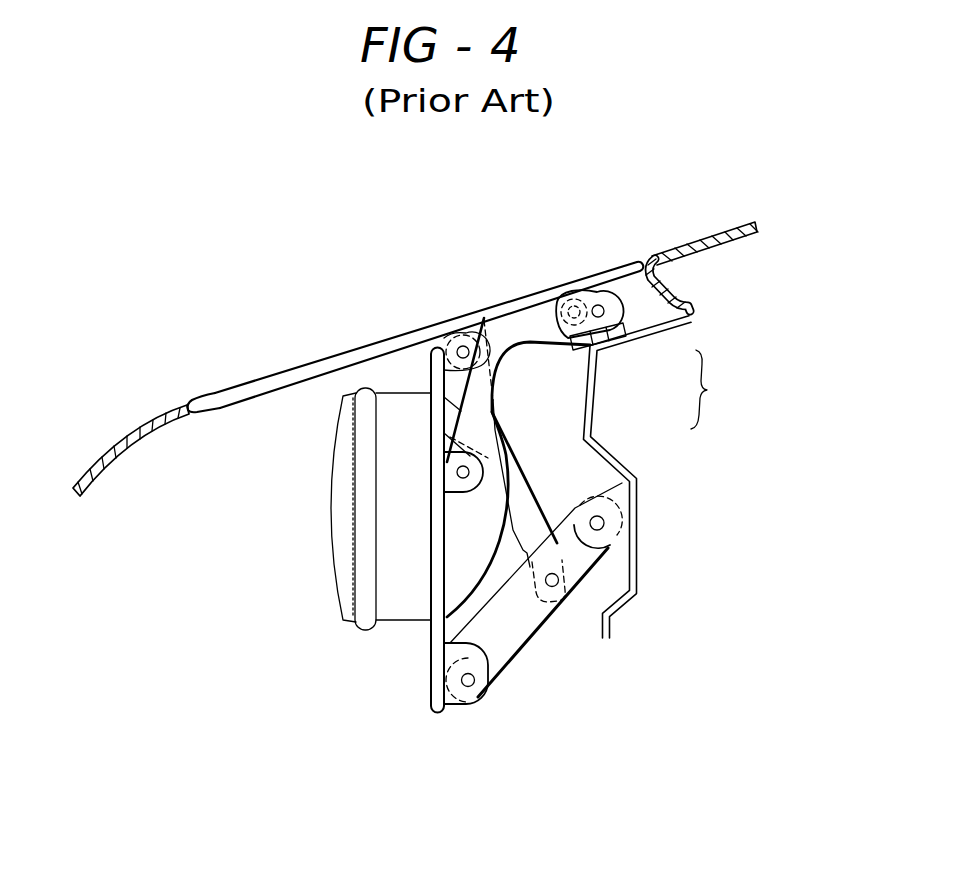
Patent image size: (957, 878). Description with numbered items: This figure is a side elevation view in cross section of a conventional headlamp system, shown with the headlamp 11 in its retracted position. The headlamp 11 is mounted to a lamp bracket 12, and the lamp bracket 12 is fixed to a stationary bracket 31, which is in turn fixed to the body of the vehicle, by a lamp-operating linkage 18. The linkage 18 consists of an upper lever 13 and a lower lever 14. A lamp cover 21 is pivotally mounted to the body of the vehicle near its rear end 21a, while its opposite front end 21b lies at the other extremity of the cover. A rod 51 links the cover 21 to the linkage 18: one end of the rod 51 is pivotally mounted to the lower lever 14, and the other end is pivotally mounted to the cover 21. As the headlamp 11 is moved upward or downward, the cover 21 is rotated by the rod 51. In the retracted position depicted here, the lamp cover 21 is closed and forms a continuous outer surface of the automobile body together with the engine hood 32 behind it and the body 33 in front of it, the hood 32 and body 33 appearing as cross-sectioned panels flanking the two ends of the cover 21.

The headlamp 11 is at (334, 504).
The lamp bracket 12 is at (431, 706).
The upper lever 13 is at (531, 342).
The lower lever 14 is at (543, 545).
The lamp-operating linkage 18 is at (716, 389).
The lamp cover 21 is at (362, 346).
The rear end of lamp cover 21a is at (635, 268).
The front end of lid 21b is at (202, 398).
The stationary bracket 31 is at (640, 473).
The engine hood 32 is at (705, 242).
The body 33 is at (116, 455).
The rod 51 is at (505, 452).